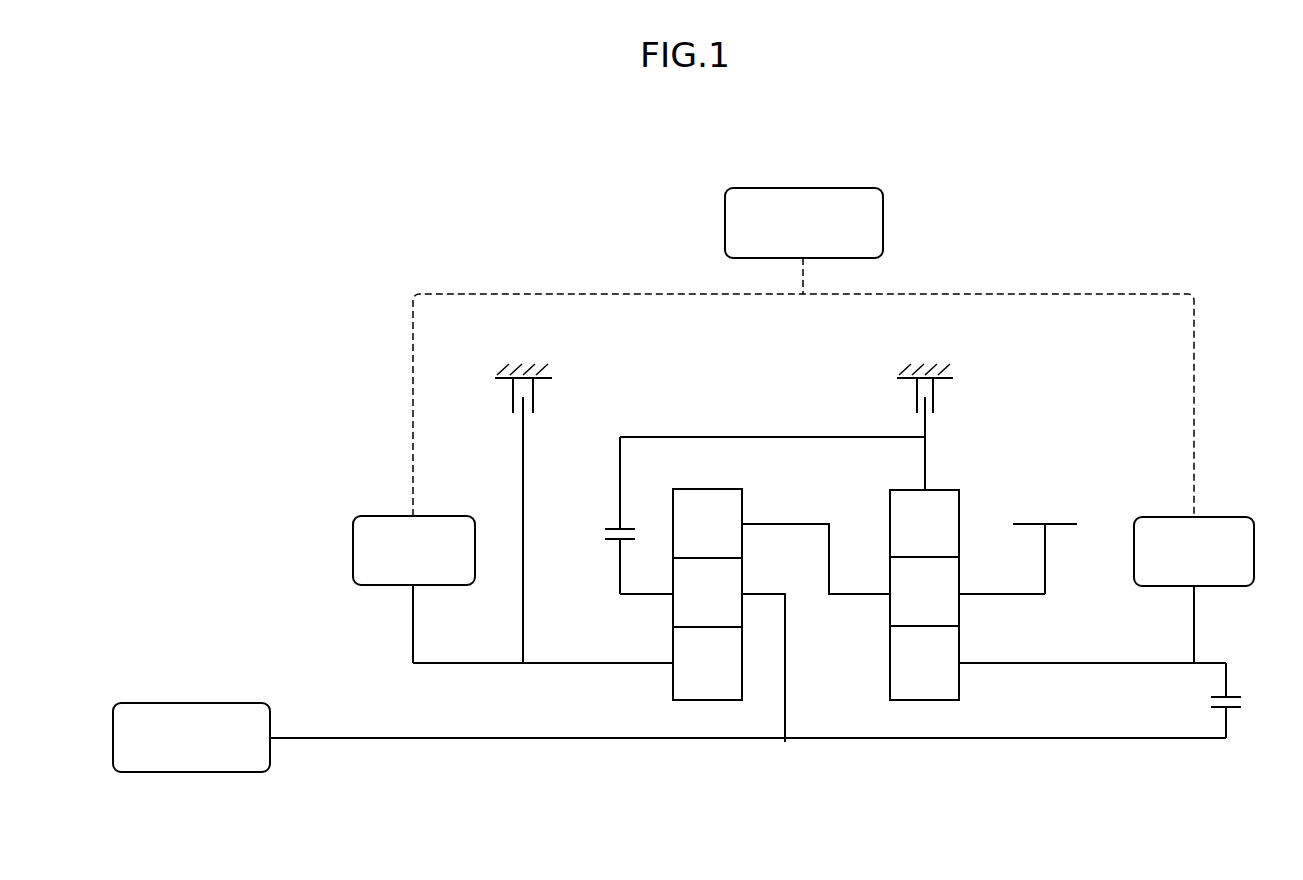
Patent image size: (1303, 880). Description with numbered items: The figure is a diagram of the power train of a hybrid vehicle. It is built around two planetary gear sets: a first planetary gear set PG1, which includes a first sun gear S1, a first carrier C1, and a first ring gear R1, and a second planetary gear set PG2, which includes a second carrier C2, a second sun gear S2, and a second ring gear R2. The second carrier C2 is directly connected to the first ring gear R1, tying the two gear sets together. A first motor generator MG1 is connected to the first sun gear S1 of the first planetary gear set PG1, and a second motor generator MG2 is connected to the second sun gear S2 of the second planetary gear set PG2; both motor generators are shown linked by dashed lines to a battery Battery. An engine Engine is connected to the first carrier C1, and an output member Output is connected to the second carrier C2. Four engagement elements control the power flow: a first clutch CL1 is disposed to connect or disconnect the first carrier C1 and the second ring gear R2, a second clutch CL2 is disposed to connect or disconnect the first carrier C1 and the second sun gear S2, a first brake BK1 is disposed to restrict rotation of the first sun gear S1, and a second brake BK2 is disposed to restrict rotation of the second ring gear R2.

The first motor generator MG1 is at (414, 589).
The second motor generator MG2 is at (1194, 590).
The first brake BK1 is at (523, 495).
The second brake BK2 is at (925, 409).
The first clutch CL1 is at (738, 515).
The second clutch CL2 is at (1198, 700).
The first planetary gear set PG1 is at (651, 657).
The second planetary gear set PG2 is at (1056, 658).
The first ring gear R1 is at (791, 552).
The first carrier C1 is at (729, 650).
The first sun gear S1 is at (577, 652).
The second ring gear R2 is at (925, 525).
The second carrier C2 is at (967, 582).
The second sun gear S2 is at (1058, 652).
The battery Battery is at (804, 241).
The engine Engine is at (669, 737).
The output member Output is at (1044, 542).